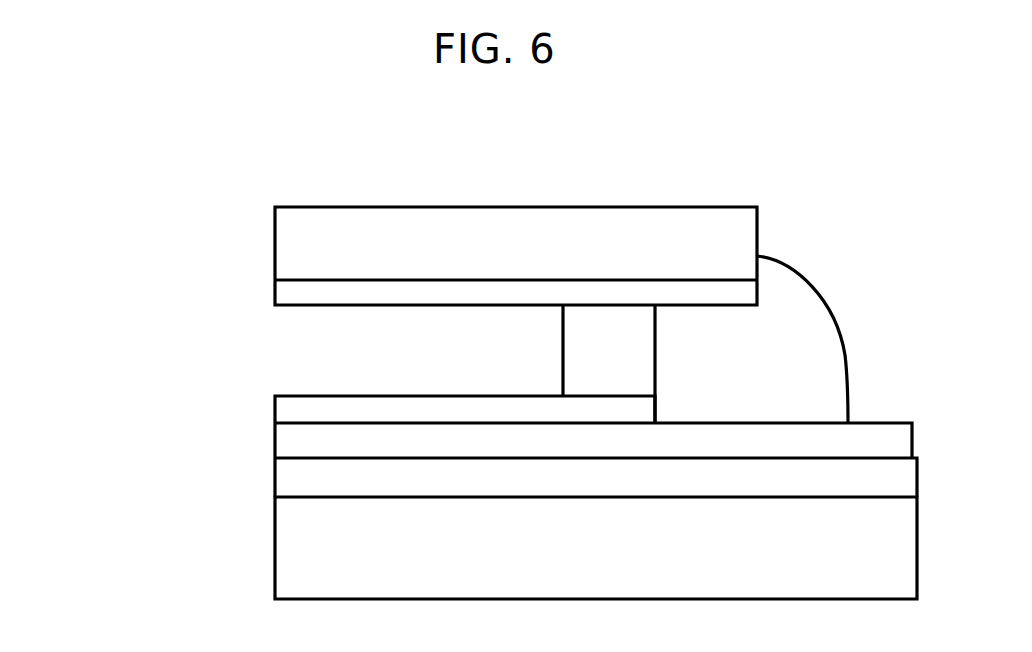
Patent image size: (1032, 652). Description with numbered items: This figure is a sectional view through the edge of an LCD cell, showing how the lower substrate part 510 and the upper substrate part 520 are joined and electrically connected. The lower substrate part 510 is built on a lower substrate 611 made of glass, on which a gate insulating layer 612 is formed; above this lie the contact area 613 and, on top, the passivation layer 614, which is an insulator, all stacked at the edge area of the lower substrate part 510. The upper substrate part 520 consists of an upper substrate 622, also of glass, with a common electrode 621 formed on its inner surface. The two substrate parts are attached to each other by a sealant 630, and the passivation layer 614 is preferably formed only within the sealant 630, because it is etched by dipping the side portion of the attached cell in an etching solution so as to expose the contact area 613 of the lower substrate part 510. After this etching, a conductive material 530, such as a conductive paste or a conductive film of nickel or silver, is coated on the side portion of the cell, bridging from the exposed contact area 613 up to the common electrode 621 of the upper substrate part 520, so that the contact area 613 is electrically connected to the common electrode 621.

The lower substrate part 510 is at (120, 403).
The upper substrate part 520 is at (125, 220).
The conductive material 530 is at (804, 316).
The lower substrate 611 is at (275, 556).
The gate insulating layer 612 is at (275, 478).
The contact area 613 is at (275, 440).
The passivation layer 614 is at (275, 404).
The common electrode 621 is at (275, 290).
The upper substrate 622 is at (275, 242).
The sealant 630 is at (578, 362).